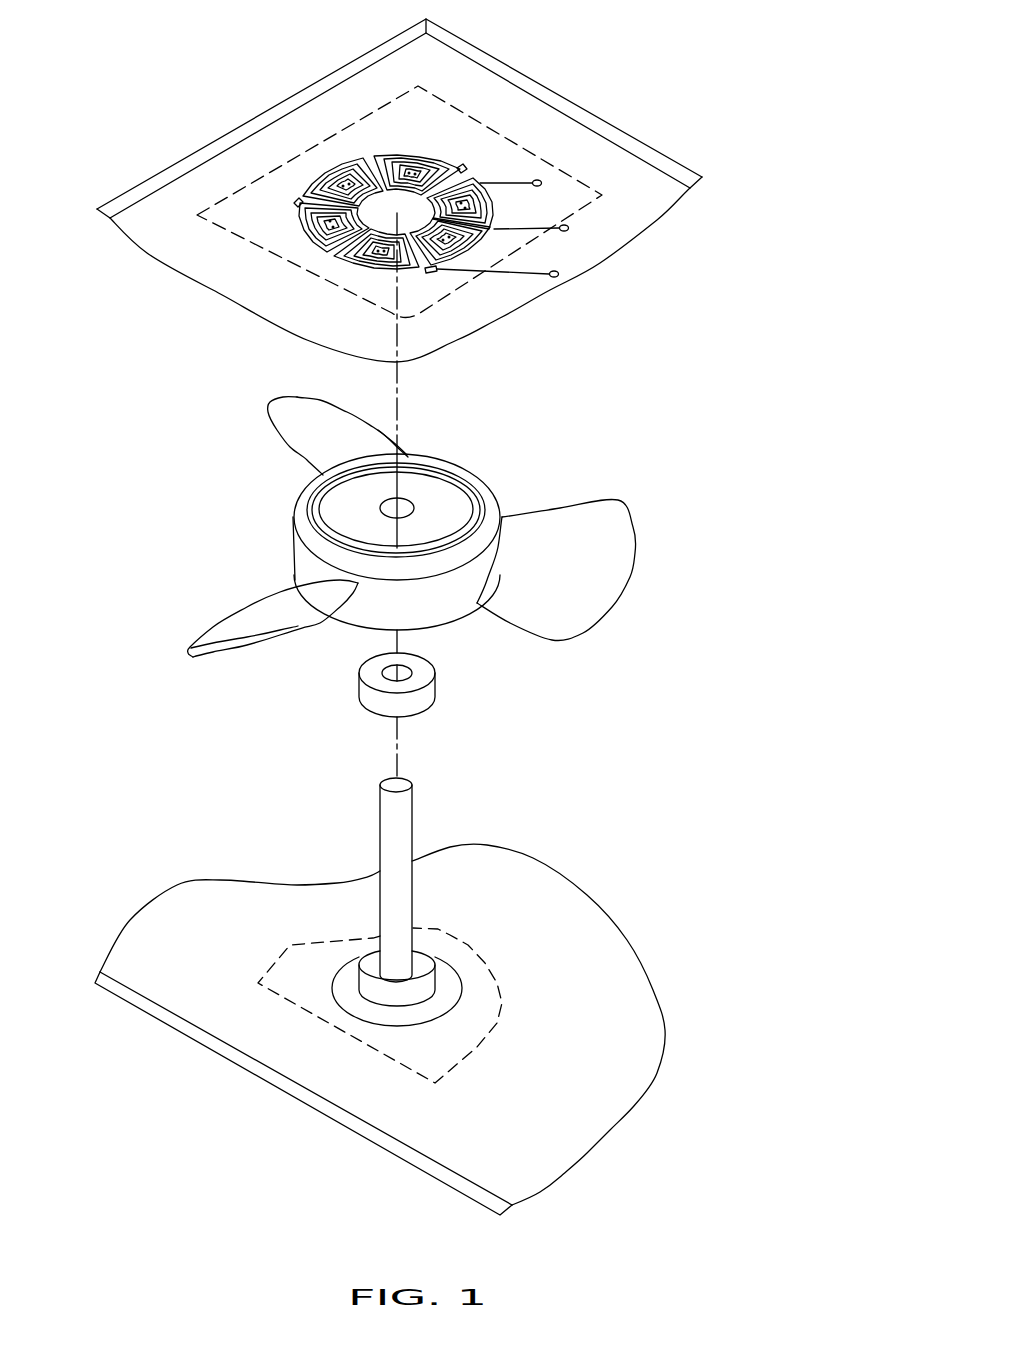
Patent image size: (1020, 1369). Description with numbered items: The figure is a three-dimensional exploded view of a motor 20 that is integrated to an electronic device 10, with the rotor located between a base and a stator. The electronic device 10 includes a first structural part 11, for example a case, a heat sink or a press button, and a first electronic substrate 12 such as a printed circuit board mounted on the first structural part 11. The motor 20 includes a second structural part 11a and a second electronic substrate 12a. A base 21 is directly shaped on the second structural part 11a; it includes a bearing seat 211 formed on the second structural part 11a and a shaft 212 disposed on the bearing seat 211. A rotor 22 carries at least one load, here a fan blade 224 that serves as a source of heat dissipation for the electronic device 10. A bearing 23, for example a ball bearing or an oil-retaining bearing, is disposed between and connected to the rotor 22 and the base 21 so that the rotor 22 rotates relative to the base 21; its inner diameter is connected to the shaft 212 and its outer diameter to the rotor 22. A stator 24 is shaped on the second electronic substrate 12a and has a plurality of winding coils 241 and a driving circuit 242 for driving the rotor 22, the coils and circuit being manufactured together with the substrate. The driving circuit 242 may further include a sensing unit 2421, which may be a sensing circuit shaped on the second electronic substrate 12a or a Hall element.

The electronic device 10 is at (88, 288).
The first structural part 11 is at (162, 960).
The second structural part 11a is at (300, 960).
The first electronic substrate 12 is at (193, 241).
The second electronic substrate 12a is at (247, 210).
The motor 20 is at (600, 664).
The base 21 is at (517, 875).
The bearing seat 211 is at (423, 963).
The shaft 212 is at (400, 893).
The rotor 22 is at (451, 499).
The fan blade 224 is at (568, 555).
The bearing 23 is at (428, 695).
The stator 24 is at (630, 318).
The winding coils 241 is at (417, 273).
The driving circuit 242 is at (527, 283).
The sensing unit 2421 is at (433, 268).